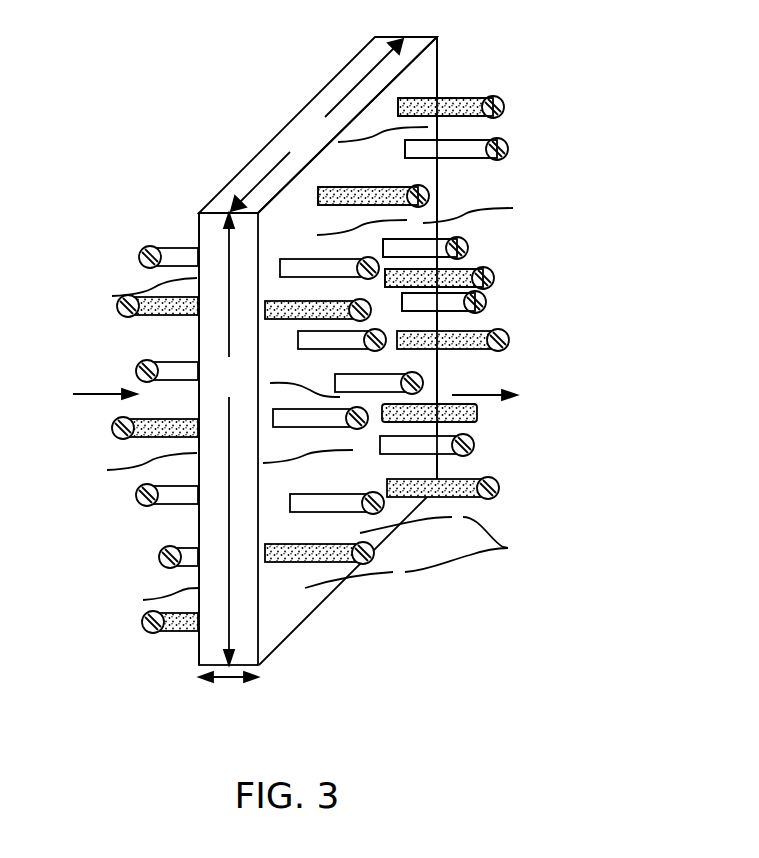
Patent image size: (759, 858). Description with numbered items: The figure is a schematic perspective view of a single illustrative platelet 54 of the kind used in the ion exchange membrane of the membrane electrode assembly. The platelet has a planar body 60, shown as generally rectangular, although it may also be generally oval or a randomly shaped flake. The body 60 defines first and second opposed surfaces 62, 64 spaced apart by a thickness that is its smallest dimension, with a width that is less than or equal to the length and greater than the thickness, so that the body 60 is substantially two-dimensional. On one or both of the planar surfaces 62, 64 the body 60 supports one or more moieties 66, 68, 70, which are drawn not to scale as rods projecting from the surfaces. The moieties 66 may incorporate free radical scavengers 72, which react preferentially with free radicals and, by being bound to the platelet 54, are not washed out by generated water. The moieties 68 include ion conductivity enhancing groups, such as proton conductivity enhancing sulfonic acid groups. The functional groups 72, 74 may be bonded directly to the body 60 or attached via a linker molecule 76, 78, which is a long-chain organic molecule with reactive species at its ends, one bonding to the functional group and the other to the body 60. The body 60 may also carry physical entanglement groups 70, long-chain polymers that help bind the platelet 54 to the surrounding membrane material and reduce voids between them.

The platelet 54 is at (340, 378).
The planar body 60 is at (208, 229).
The first surface 62 is at (277, 608).
The second surface 64 is at (196, 345).
The moieties 66 is at (430, 196).
The moieties 68 is at (487, 302).
The physical entanglement groups 70 is at (417, 552).
The free radical scavengers 72 is at (114, 425).
The functional groups 74 is at (160, 562).
The linker molecule 76 is at (150, 442).
The linker molecule 78 is at (138, 503).